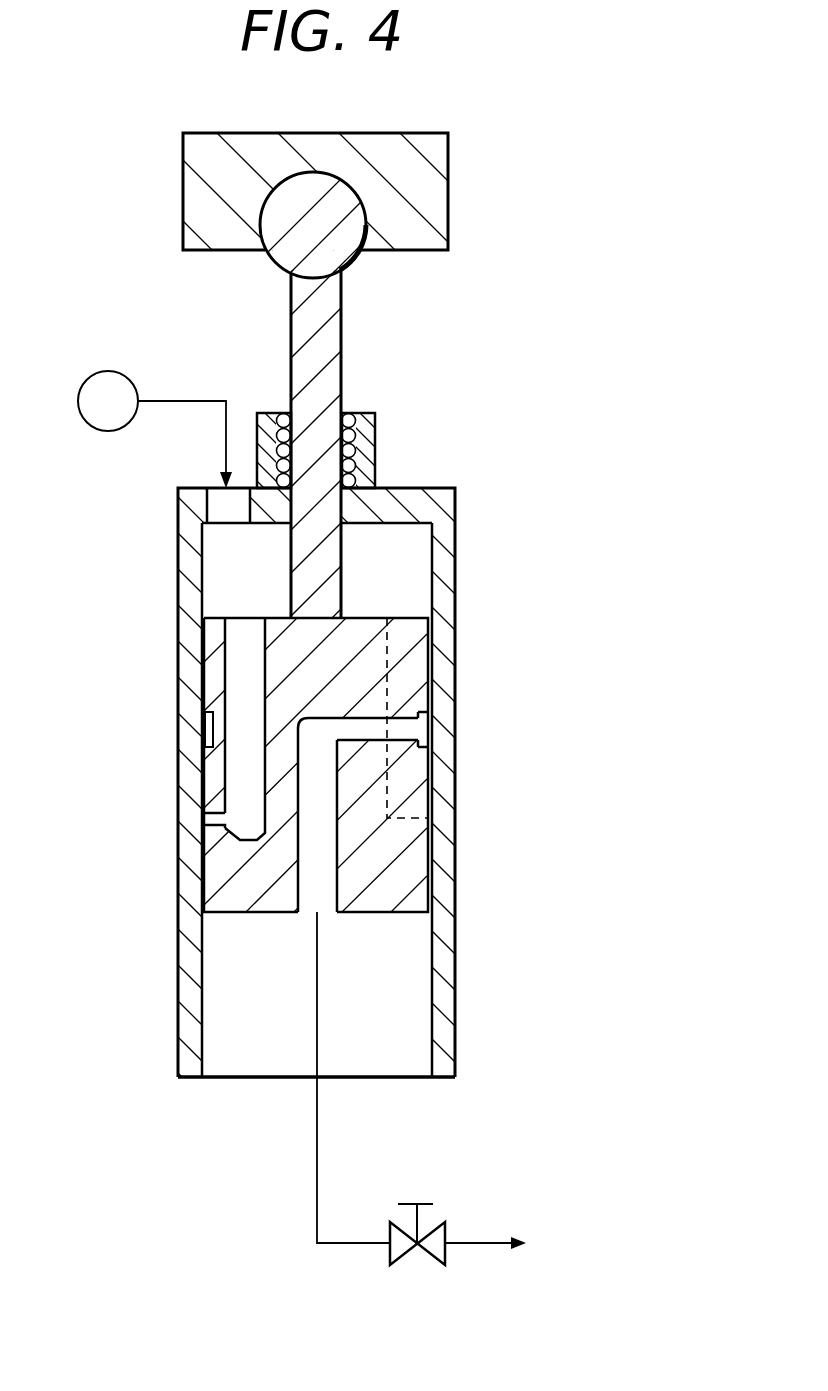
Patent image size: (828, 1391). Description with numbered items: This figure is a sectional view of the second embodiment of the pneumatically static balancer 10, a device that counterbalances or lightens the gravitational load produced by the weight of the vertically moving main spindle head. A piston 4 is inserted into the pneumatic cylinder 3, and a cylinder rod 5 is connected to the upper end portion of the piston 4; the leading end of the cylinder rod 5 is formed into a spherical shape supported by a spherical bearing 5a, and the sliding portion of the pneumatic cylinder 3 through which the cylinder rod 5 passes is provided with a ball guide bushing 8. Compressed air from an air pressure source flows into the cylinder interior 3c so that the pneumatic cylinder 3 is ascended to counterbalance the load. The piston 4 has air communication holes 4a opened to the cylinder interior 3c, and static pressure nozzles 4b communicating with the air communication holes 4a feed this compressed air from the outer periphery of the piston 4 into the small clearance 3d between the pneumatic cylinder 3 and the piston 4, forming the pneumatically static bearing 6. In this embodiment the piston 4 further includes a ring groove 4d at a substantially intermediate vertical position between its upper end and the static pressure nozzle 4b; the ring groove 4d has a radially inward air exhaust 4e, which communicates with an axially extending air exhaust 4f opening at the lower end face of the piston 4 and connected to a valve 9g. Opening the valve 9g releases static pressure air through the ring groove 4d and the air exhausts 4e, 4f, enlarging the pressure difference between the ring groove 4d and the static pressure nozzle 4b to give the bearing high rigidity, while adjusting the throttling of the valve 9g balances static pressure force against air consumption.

The pneumatically static balancer 10 is at (552, 311).
The spherical bearing 5a is at (367, 222).
The cylinder rod 5 is at (342, 370).
The ball guide bushing 8 is at (352, 436).
The pneumatic cylinder 3 is at (447, 1055).
The cylinder interior 3c is at (402, 581).
The small clearance 3d is at (442, 892).
The piston 4 is at (416, 662).
The air communication hole 4a is at (239, 684).
The static pressure nozzle 4b is at (209, 818).
The ring groove 4d is at (424, 723).
The air exhaust 4e is at (398, 740).
The air exhaust 4f is at (327, 905).
The pneumatically static bearing 6 is at (436, 852).
The valve 9g is at (405, 1262).